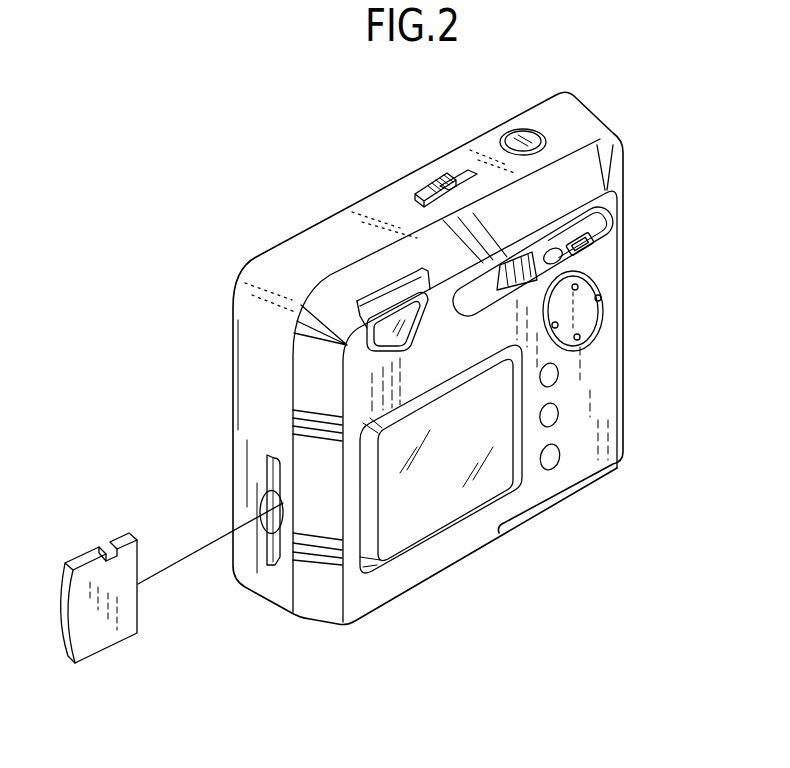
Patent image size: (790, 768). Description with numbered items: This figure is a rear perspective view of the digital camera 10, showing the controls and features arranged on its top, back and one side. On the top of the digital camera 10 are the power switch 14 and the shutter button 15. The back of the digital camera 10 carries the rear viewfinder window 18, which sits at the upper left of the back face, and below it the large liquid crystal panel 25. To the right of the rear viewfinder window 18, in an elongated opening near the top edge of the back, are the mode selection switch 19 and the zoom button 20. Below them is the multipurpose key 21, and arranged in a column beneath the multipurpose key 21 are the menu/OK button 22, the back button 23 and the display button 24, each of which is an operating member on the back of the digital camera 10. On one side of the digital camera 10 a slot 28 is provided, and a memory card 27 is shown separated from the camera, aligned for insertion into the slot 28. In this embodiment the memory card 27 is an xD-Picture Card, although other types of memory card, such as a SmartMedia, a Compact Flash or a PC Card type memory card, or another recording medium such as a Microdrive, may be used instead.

The digital camera 10 is at (288, 224).
The power switch 14 is at (443, 178).
The shutter button 15 is at (528, 136).
The rear viewfinder window 18 is at (403, 331).
The mode selection switch 19 is at (521, 276).
The zoom button 20 is at (594, 244).
The multipurpose key 21 is at (583, 312).
The menu/OK button 22 is at (553, 376).
The back button 23 is at (553, 416).
The display button 24 is at (554, 460).
The liquid crystal panel 25 is at (434, 508).
The memory card 27 is at (91, 553).
The slot 28 is at (268, 480).